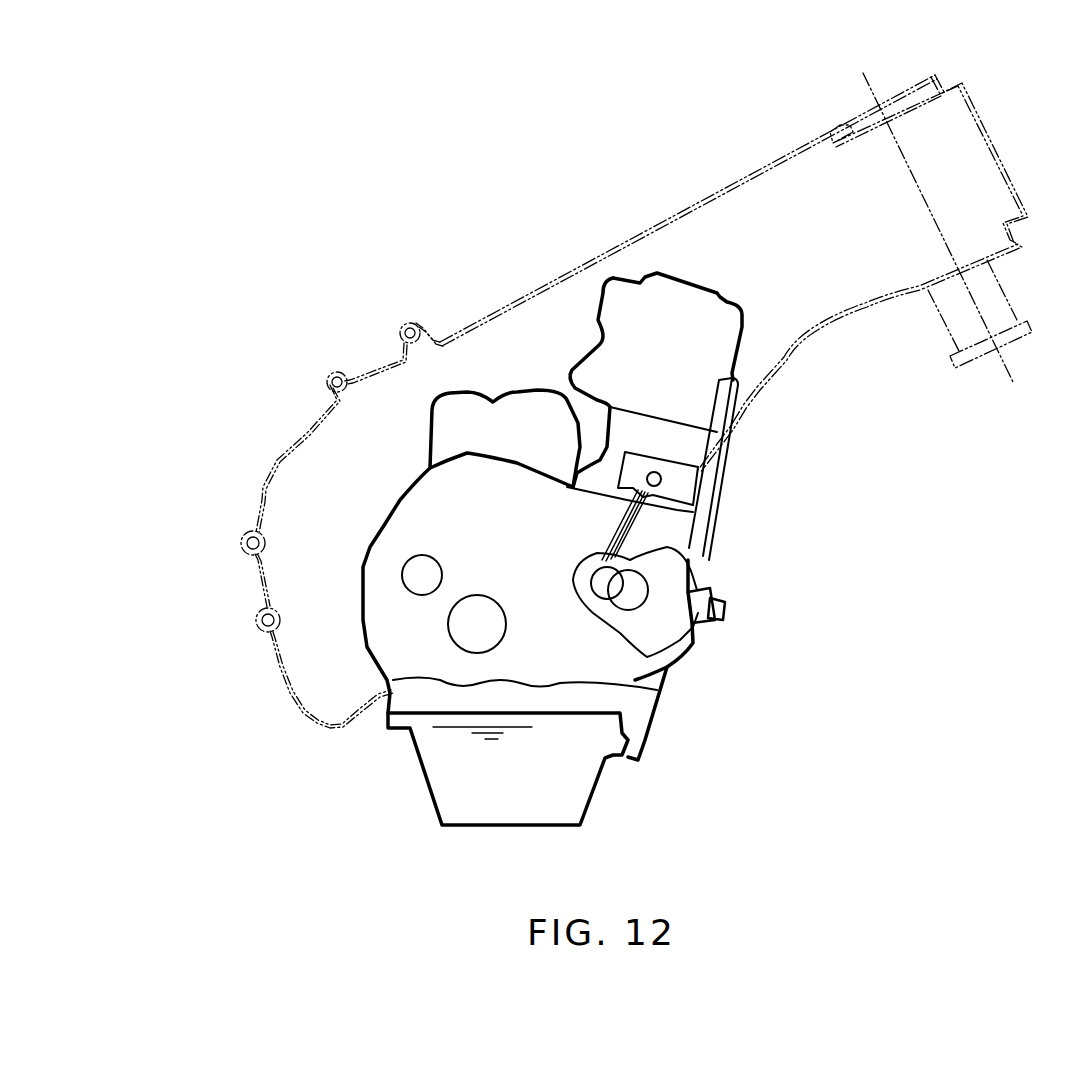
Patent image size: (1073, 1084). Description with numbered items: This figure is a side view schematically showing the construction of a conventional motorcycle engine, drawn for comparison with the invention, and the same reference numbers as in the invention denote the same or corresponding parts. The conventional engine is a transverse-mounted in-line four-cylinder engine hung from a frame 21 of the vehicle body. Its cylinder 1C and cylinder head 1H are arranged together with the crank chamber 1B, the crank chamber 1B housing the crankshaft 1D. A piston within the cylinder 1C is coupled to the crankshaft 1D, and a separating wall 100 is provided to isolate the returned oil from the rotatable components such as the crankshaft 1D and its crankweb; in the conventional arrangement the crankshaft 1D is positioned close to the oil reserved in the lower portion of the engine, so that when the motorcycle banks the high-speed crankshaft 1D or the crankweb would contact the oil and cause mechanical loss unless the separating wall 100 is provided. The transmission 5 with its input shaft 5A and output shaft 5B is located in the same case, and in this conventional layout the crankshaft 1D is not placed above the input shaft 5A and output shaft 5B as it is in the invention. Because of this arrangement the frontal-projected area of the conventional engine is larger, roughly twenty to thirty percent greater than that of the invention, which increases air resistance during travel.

The vehicle body frame 21 is at (720, 213).
The transmission 5 is at (377, 625).
The input shaft 5A is at (481, 620).
The output shaft 5B is at (422, 573).
The cylinder head 1H is at (723, 343).
The cylinder 1C is at (688, 462).
The separating wall 100 is at (708, 517).
The crank chamber 1B is at (680, 570).
The crankshaft 1D is at (627, 595).